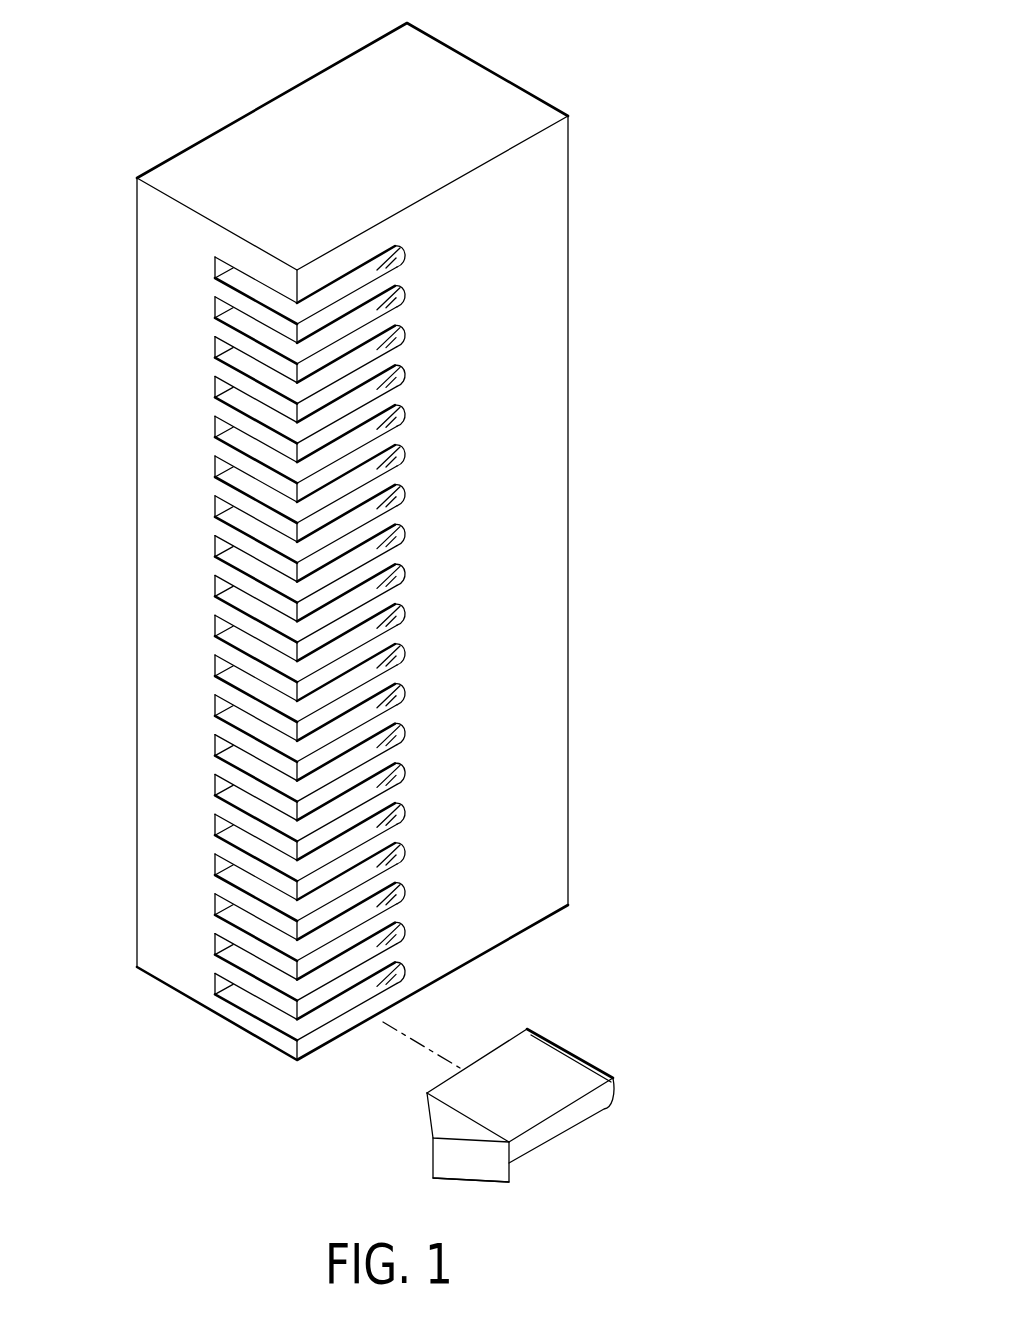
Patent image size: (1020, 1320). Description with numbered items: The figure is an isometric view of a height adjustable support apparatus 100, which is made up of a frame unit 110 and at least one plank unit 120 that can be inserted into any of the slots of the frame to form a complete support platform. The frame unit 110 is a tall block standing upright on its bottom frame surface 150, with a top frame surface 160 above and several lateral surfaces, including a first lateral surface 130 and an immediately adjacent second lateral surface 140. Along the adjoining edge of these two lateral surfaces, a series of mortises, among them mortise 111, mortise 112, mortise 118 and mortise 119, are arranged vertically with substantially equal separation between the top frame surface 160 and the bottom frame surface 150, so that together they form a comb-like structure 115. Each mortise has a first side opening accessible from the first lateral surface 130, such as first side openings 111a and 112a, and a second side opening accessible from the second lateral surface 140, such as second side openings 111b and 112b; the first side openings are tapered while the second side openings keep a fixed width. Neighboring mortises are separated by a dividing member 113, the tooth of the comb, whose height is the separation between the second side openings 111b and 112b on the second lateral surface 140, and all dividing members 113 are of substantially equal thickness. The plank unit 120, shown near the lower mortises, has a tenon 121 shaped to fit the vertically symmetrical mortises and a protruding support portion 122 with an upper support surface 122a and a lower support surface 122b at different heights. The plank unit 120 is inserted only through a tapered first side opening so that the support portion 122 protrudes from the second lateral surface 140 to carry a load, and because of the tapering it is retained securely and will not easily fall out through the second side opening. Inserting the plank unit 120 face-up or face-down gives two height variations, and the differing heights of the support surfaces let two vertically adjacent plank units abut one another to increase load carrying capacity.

The height adjustable support apparatus 100 is at (615, 93).
The frame unit 110 is at (364, 580).
The mortise 111 is at (358, 1026).
The first side opening 111a is at (367, 995).
The second side opening 111b is at (262, 1008).
The mortise 112 is at (352, 1018).
The first side opening 112a is at (370, 947).
The second side opening 112b is at (233, 953).
The dividing member 113 is at (282, 1002).
The comb-like structure 115 is at (305, 685).
The mortise 118 is at (402, 295).
The mortise 119 is at (402, 255).
The plank unit 120 is at (495, 1122).
The tenon 121 is at (563, 1125).
The support portion 122 is at (461, 1159).
The upper support surface 122a is at (453, 1121).
The lower support surface 122b is at (472, 1182).
The first lateral surface 130 is at (527, 600).
The second lateral surface 140 is at (160, 447).
The bottom frame surface 150 is at (535, 923).
The top frame surface 160 is at (305, 130).